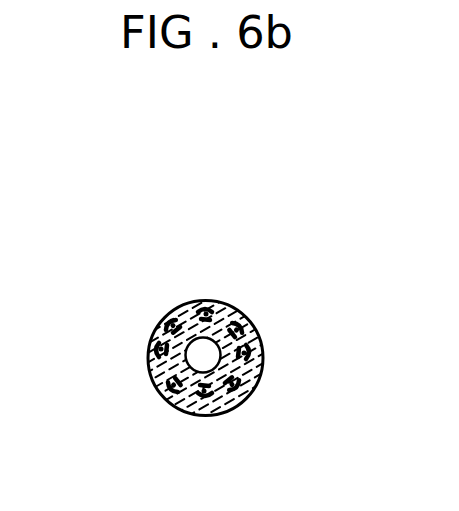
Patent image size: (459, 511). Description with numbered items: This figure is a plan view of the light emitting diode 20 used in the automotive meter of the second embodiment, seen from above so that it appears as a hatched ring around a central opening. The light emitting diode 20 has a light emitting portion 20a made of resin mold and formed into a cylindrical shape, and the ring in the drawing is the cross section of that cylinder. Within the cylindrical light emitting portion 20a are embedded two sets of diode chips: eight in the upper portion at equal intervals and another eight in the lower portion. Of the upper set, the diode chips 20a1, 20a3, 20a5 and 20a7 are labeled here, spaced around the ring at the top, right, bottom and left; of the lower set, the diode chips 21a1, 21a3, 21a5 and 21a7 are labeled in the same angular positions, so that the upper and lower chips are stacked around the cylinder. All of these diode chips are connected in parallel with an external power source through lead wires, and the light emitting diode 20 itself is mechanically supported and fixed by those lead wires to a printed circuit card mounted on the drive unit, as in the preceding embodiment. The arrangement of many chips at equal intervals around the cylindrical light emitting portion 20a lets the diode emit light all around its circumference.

The light emitting diode 20 is at (202, 310).
The light emitting portion 20a is at (188, 312).
The diode chip 20a1 is at (208, 332).
The diode chip 20a3 is at (262, 376).
The diode chip 20a5 is at (236, 398).
The diode chip 20a7 is at (123, 330).
The diode chip 21a1 is at (204, 312).
The diode chip 21a3 is at (245, 365).
The diode chip 21a5 is at (204, 398).
The diode chip 21a7 is at (163, 372).